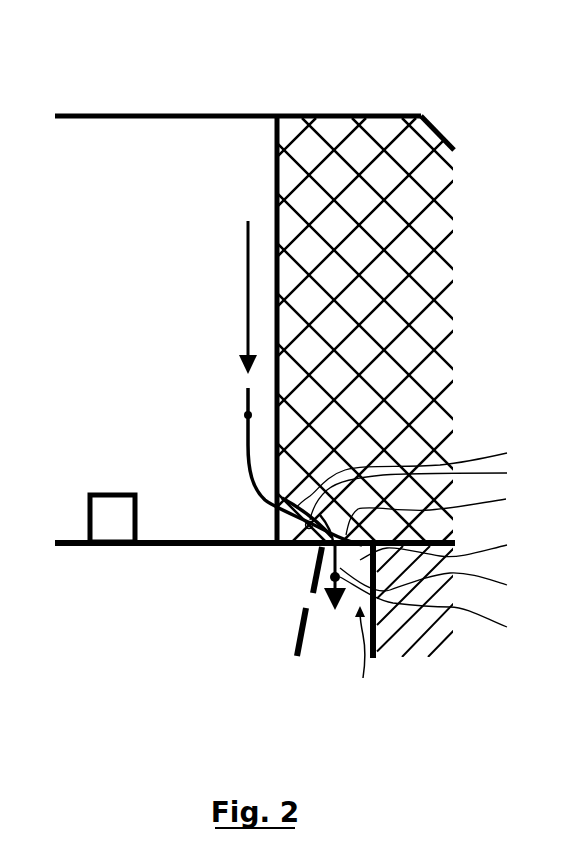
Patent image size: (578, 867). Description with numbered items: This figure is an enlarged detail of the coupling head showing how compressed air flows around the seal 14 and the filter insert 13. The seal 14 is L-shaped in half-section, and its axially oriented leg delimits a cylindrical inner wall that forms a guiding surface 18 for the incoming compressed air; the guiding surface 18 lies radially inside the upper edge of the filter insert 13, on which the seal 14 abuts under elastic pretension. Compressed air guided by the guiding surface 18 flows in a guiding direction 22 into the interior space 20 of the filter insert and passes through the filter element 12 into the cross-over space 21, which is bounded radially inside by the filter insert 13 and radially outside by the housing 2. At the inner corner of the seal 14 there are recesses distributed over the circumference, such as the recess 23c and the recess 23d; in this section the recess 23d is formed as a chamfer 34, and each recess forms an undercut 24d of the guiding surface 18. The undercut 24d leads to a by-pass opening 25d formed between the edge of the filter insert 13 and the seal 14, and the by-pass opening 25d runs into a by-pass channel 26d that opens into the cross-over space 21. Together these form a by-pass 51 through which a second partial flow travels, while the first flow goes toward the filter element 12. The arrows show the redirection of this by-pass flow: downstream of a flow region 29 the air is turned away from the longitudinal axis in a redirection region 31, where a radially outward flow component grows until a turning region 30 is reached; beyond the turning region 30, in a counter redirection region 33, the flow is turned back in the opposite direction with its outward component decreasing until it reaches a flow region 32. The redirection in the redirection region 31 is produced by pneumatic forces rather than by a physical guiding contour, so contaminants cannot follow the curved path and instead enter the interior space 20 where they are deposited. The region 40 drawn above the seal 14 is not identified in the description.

The housing 2 is at (430, 648).
The filter element 12 is at (261, 658).
The filter insert 13 is at (296, 637).
The seal 14 is at (333, 168).
The guiding surface 18 is at (272, 177).
The interior space 20 is at (217, 651).
The cross-over space 21 is at (327, 651).
The guiding direction 22 is at (247, 283).
The recess 23c is at (117, 511).
The recess 23d is at (282, 543).
The undercut 24d is at (432, 490).
The by-pass opening 25d is at (450, 511).
The by-pass channel 26d is at (457, 546).
The flow region 29 is at (245, 415).
The turning region 30 is at (311, 543).
The redirection region 31 is at (256, 495).
The flow region 32 is at (440, 612).
The counter redirection region 33 is at (440, 585).
The chamfer 34 is at (418, 481).
The spray region 40 is at (82, 195).
The by-pass 51 is at (360, 657).